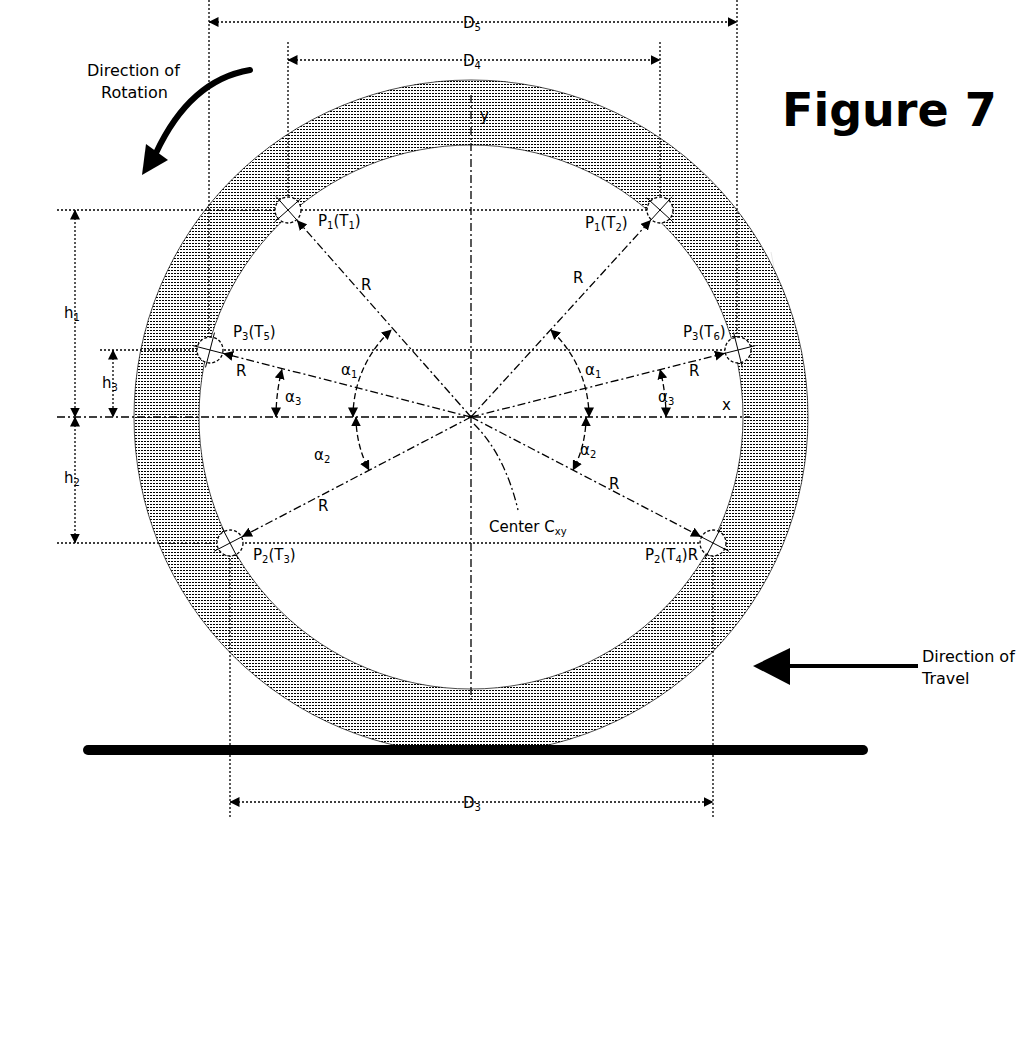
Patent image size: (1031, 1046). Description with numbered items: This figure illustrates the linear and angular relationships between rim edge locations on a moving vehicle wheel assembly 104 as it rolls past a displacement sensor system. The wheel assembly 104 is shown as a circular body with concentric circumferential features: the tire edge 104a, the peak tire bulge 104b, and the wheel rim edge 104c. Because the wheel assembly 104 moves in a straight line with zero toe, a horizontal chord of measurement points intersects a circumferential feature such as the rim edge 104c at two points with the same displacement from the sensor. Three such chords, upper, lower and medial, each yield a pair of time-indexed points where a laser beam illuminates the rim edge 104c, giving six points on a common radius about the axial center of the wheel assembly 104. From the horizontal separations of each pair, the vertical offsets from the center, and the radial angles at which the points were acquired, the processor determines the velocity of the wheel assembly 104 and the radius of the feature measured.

The vehicle wheel assembly 104 is at (826, 367).
The tire edge 104a is at (771, 252).
The peak tire bulge 104b is at (757, 308).
The wheel rim edge 104c is at (747, 483).